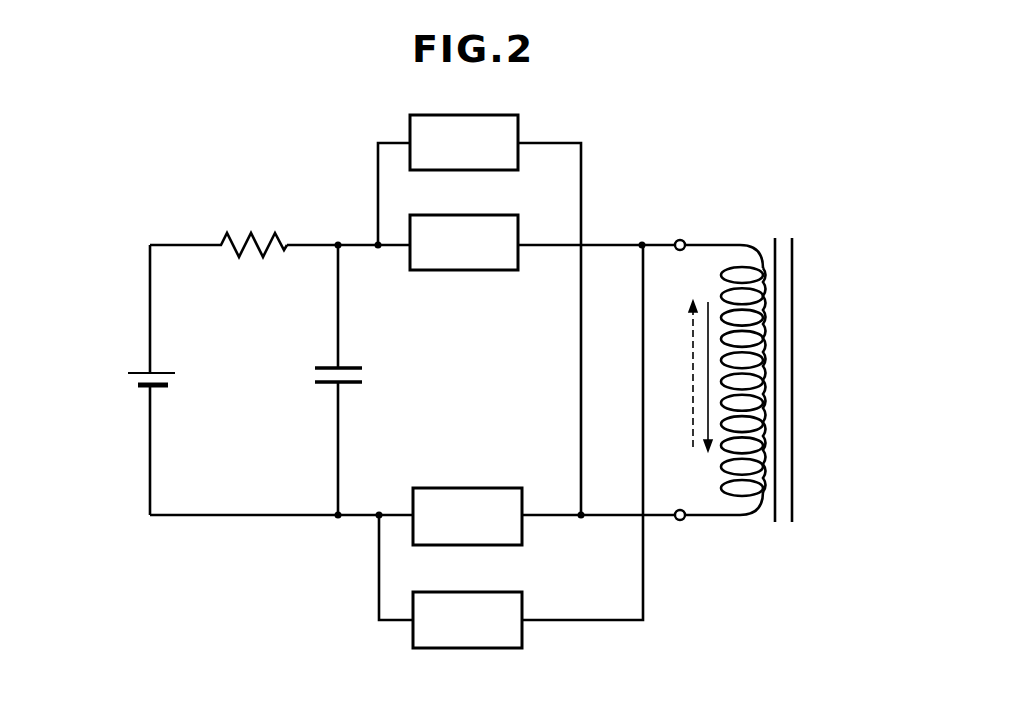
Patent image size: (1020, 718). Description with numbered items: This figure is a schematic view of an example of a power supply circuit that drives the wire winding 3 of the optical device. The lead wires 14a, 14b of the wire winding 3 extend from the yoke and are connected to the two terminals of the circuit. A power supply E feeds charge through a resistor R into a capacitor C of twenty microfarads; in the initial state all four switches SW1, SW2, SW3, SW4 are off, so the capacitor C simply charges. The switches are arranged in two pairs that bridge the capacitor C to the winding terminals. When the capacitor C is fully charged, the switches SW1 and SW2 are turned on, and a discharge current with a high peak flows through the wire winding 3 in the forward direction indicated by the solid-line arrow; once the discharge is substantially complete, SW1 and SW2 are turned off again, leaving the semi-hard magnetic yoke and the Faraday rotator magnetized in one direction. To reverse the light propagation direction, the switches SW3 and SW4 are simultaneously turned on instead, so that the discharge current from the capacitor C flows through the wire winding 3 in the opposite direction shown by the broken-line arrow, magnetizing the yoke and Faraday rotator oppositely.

The lead wire 14a is at (712, 243).
The lead wire 14b is at (713, 517).
The wire winding 3 is at (762, 370).
The resistor R is at (251, 226).
The power supply E is at (169, 375).
The capacitor C is at (360, 375).
The switch SW1 is at (464, 242).
The switch SW2 is at (467, 516).
The switch SW3 is at (464, 142).
The switch SW4 is at (467, 620).